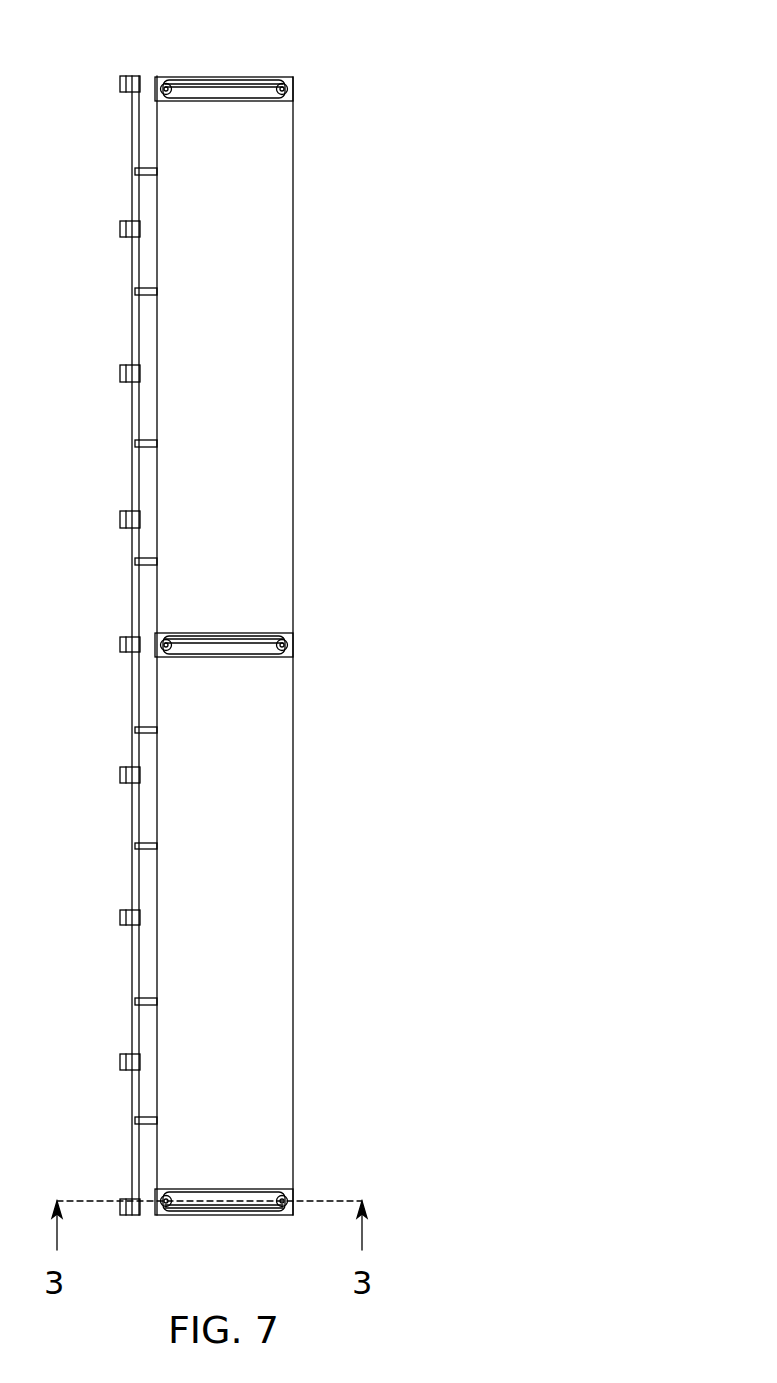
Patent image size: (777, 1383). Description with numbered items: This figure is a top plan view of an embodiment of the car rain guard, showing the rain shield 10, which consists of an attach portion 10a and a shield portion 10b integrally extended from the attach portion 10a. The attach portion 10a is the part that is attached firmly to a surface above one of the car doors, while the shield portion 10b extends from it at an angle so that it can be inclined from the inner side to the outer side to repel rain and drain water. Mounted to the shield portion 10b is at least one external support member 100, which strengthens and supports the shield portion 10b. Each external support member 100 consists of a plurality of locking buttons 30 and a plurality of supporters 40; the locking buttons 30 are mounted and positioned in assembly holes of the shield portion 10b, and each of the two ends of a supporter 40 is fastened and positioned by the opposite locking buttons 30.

The rain shield 10 is at (218, 618).
The attach portion 10a is at (147, 815).
The shield portion 10b is at (278, 893).
The locking button 30 is at (163, 82).
The supporter 40 is at (222, 88).
The external support member 100 is at (242, 666).